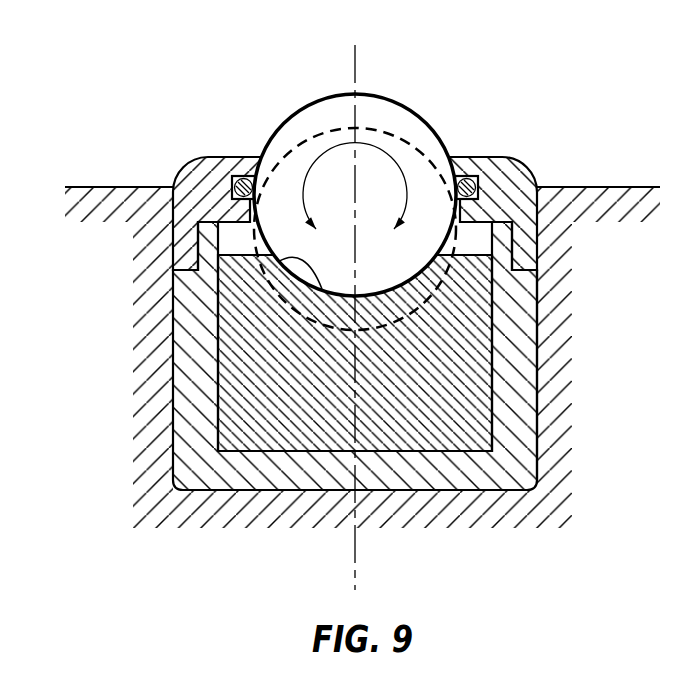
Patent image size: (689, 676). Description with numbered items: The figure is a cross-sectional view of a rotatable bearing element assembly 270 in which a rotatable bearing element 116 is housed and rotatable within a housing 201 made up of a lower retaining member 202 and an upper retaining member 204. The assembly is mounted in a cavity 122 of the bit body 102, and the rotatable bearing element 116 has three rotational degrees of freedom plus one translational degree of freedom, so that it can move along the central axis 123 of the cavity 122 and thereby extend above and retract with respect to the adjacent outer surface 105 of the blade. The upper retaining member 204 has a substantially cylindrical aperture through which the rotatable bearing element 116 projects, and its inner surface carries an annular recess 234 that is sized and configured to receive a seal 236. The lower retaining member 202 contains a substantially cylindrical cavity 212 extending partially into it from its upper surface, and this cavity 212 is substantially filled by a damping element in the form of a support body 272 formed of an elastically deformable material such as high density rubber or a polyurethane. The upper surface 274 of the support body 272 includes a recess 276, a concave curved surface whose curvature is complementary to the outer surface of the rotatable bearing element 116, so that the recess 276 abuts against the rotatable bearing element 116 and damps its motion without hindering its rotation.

The rotatable bearing element assembly 270 is at (128, 103).
The outer surface of the blade 105 is at (93, 187).
The central axis 123 is at (356, 51).
The rotatable bearing element 116 is at (420, 113).
The seal 236 is at (242, 175).
The annular recess 234 is at (473, 176).
The upper retaining member 204 is at (512, 162).
The cavity 212 is at (238, 238).
The upper surface of the support body 274 is at (472, 256).
The bit body 102 is at (629, 308).
The recess 276 is at (278, 262).
The housing 201 is at (160, 370).
The cavity 122 is at (538, 363).
The support body 272 is at (463, 402).
The lower retaining member 202 is at (538, 457).